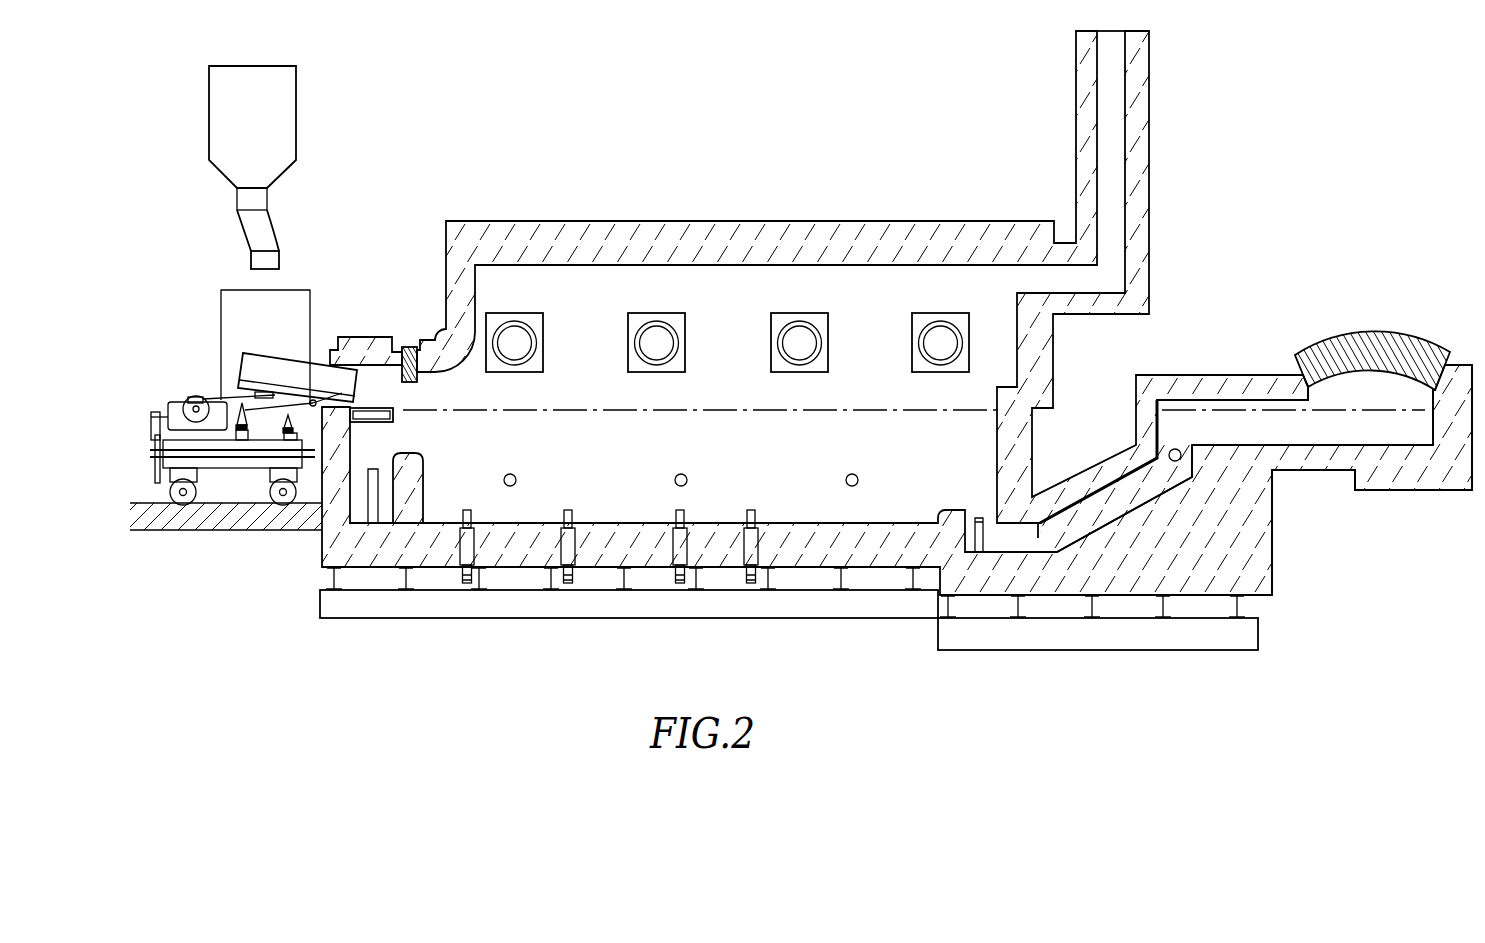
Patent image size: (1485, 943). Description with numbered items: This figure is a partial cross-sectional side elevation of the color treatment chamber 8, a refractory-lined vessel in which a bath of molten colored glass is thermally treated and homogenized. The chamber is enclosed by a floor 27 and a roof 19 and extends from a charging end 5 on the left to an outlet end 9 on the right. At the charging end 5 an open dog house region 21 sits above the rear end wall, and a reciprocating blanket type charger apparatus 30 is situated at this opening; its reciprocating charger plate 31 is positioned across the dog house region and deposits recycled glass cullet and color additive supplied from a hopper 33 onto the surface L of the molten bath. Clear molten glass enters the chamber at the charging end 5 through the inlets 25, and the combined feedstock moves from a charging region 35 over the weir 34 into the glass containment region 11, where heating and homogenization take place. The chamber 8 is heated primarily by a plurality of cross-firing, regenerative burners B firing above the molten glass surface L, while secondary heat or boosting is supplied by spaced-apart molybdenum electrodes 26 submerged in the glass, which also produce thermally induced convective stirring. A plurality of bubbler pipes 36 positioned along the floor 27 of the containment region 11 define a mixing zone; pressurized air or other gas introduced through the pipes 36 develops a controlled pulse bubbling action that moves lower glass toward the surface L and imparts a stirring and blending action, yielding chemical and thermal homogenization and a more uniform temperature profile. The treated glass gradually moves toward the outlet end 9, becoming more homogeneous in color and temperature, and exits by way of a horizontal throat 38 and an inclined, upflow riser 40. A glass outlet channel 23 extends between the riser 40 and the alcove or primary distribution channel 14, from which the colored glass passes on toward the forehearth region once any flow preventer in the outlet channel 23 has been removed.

The charging end 5 is at (320, 528).
The color treatment chamber 8 is at (771, 201).
The outlet end 9 is at (1055, 373).
The glass containment region 11 is at (619, 444).
The primary distribution channel 14 is at (1368, 430).
The roof 19 is at (793, 221).
The dog house region 21 is at (373, 380).
The glass outlet channel 23 is at (1262, 425).
The inlets 25 is at (393, 408).
The molybdenum electrodes 26 is at (377, 467).
The floor 27 is at (810, 523).
The blanket charger 30 is at (187, 383).
The reciprocating charger plate 31 is at (288, 357).
The hopper 33 is at (297, 96).
The weir 34 is at (410, 460).
The charging region 35 is at (387, 498).
The bubbler pipes 36 is at (565, 587).
The horizontal throat 38 is at (1038, 520).
The inclined upflow riser 40 is at (1123, 488).
The regenerative burners B is at (628, 328).
The molten glass surface L is at (750, 410).